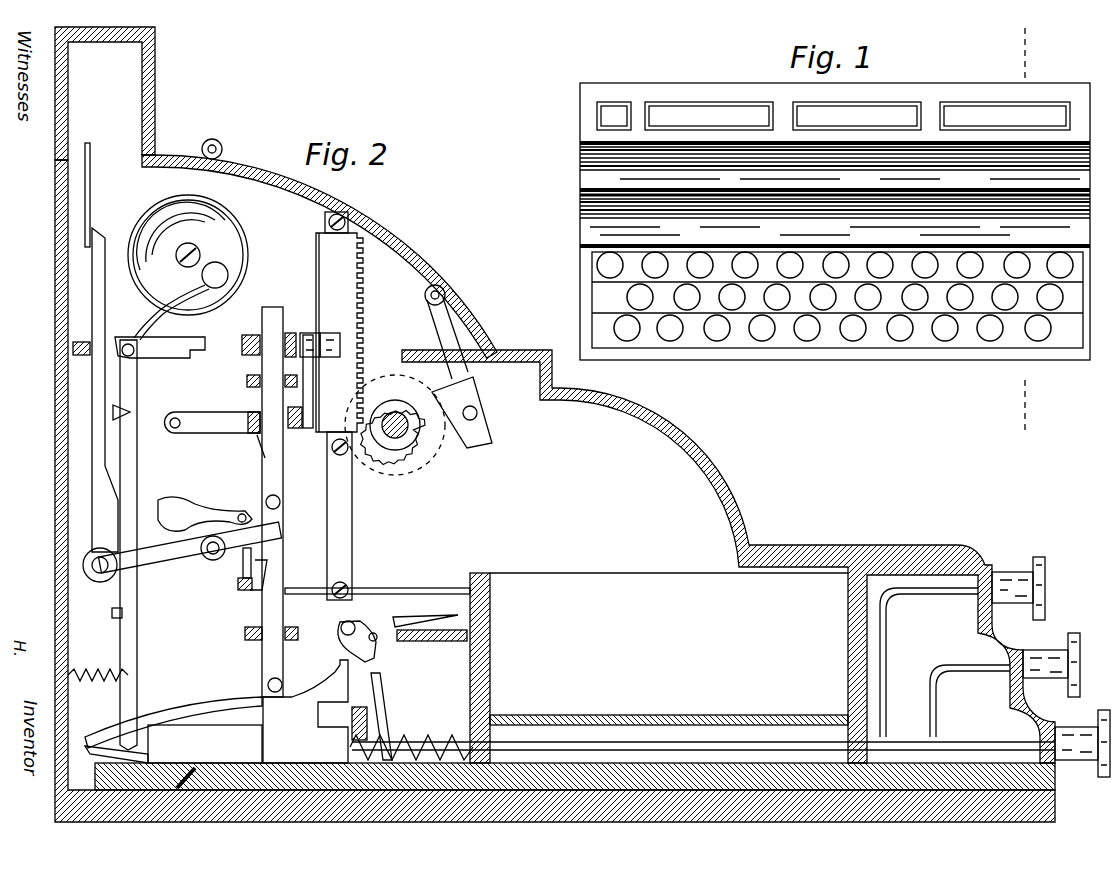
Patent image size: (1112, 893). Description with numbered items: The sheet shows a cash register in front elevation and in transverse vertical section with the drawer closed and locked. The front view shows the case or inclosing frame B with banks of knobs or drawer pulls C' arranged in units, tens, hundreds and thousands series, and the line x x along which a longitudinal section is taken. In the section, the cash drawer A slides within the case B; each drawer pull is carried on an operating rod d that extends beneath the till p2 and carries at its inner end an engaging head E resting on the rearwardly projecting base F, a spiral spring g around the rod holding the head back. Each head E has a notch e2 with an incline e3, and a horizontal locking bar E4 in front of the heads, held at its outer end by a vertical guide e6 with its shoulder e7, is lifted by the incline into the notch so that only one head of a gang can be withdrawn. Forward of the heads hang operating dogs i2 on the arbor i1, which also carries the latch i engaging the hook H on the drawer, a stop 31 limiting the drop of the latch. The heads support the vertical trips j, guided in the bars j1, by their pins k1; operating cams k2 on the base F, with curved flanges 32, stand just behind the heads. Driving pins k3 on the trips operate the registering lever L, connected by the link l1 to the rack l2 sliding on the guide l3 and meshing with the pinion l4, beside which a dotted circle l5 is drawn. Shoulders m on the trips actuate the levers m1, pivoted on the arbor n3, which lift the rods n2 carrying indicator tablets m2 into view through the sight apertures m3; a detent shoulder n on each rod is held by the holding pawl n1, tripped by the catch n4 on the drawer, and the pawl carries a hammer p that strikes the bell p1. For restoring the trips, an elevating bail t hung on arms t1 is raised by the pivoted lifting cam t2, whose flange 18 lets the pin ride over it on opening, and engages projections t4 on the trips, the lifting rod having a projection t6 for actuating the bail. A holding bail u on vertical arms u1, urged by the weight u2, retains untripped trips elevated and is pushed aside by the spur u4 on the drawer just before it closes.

In FIG. 1, the section line x is at (1022, 220).
In FIG. 1, the case or inclosing frame B is at (582, 230).
In FIG. 2, the case or inclosing frame B is at (736, 480).
In FIG. 2, the cash drawer A is at (628, 573).
In FIG. 2, the drawer pulls C' is at (1051, 669).
In FIG. 2, the operating rod d is at (881, 668).
In FIG. 2, the till p2 is at (659, 668).
In FIG. 2, the bell p1 is at (201, 252).
In FIG. 2, the hammer p is at (181, 301).
In FIG. 2, the sight apertures m3 is at (78, 120).
In FIG. 2, the indicator tablet m2 is at (102, 195).
In FIG. 2, the tablet lever m1 is at (190, 547).
In FIG. 2, the driving projection m is at (281, 501).
In FIG. 2, the detent shoulder n is at (98, 454).
In FIG. 2, the holding pawl n1 is at (131, 414).
In FIG. 2, the tablet rod n2 is at (122, 338).
In FIG. 2, the arbor n3 is at (135, 356).
In FIG. 2, the catch n4 is at (114, 752).
In FIG. 2, the holding bail u is at (238, 586).
In FIG. 2, the bail arms u1 is at (236, 560).
In FIG. 2, the weight u2 is at (205, 514).
In FIG. 2, the thrusting spur u4 is at (316, 588).
In FIG. 2, the trip j is at (272, 502).
In FIG. 2, the guide bars j1 is at (242, 346).
In FIG. 2, the trip pin k1 is at (268, 686).
In FIG. 2, the operating cam k2 is at (205, 744).
In FIG. 2, the driving pin k3 is at (284, 382).
In FIG. 2, the elevating bail t is at (250, 434).
In FIG. 2, the bail arms t1 is at (213, 423).
In FIG. 2, the lifting cam t2 is at (178, 716).
In FIG. 2, the trip shoulders t4 is at (247, 381).
In FIG. 2, the lifting rod projection t6 is at (258, 442).
In FIG. 2, the registering lever L is at (295, 430).
In FIG. 2, the link l1 is at (308, 430).
In FIG. 2, the rack l2 is at (339, 322).
In FIG. 2, the rack guide l3 is at (339, 516).
In FIG. 2, the pinion l4 is at (426, 375).
In FIG. 2, the gear path l5 is at (400, 440).
In FIG. 2, the latch i is at (425, 612).
In FIG. 2, the arbor i1 is at (341, 628).
In FIG. 2, the operating dog i2 is at (345, 648).
In FIG. 2, the stop 31 is at (378, 653).
In FIG. 2, the hook H is at (432, 635).
In FIG. 2, the engaging head E is at (305, 711).
In FIG. 2, the locking bar E4 is at (372, 720).
In FIG. 2, the notch e2 is at (327, 710).
In FIG. 2, the incline e3 is at (336, 728).
In FIG. 2, the vertical guide e6 is at (378, 678).
In FIG. 2, the shoulder e7 is at (368, 730).
In FIG. 2, the spiral spring g is at (411, 734).
In FIG. 2, the cam flange 18 is at (150, 715).
In FIG. 2, the operating flange 32 is at (178, 720).
In FIG. 2, the drawer base F is at (188, 779).